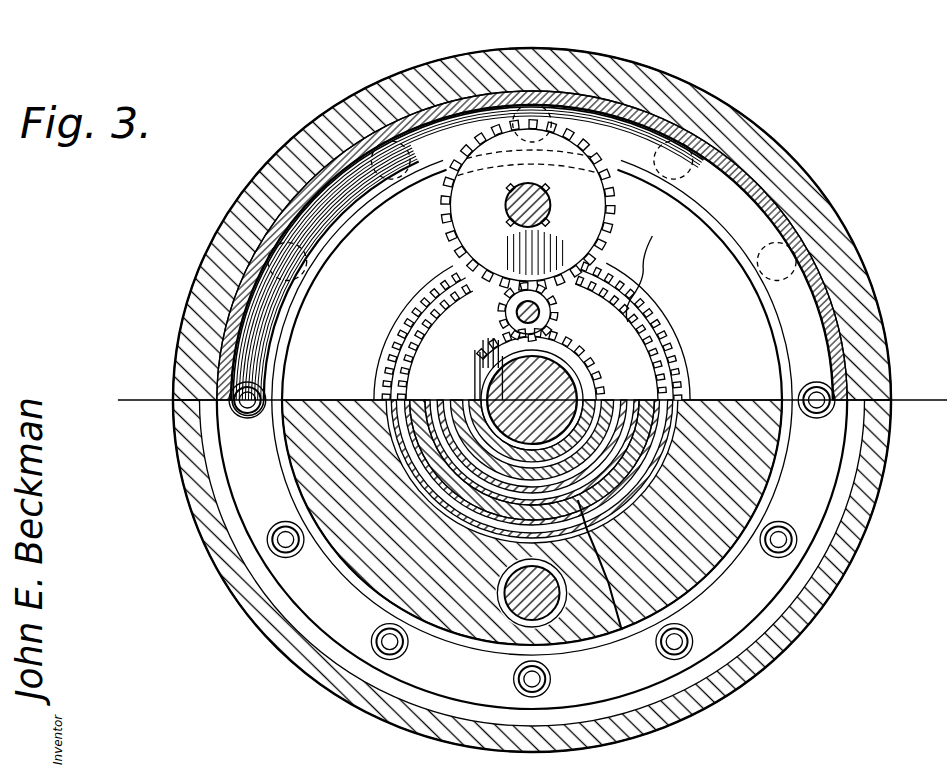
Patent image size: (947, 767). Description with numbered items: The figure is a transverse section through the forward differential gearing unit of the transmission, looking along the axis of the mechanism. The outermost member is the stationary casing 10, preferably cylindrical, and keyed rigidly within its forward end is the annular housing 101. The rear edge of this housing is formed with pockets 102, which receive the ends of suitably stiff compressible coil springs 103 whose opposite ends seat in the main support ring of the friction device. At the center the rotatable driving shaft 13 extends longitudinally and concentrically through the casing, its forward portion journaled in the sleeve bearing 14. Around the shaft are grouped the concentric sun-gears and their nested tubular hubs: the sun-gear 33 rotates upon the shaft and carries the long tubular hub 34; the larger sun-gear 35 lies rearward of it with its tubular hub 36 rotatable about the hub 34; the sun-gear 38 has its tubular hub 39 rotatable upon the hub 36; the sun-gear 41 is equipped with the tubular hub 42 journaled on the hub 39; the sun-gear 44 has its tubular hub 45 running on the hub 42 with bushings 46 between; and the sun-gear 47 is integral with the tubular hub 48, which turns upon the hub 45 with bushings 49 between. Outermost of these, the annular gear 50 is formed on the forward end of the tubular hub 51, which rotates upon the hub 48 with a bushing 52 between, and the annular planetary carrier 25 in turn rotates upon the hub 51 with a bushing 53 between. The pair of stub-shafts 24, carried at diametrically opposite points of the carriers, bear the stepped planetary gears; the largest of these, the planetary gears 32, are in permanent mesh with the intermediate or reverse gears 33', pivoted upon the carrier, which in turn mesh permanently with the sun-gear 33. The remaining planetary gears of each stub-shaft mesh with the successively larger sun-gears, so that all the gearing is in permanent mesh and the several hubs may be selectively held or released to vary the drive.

The stationary casing 10 is at (303, 150).
The annular housing 101 is at (288, 207).
The pockets 102 is at (527, 110).
The compressible coil springs 103 is at (277, 553).
The driving shaft 13 is at (548, 346).
The sleeve bearing 14 is at (578, 386).
The stub-shafts 24 is at (547, 200).
The annular planetary carrier 25 is at (725, 455).
The planetary gears 32 is at (443, 233).
The sun-gear 33 is at (655, 333).
The intermediate or reverse gears 33' is at (436, 343).
The tubular hub 34 is at (508, 338).
The sun-gear 35 is at (670, 377).
The tubular hub 36 is at (474, 353).
The sun-gear 38 is at (652, 317).
The tubular hub 39 is at (474, 398).
The sun-gear 41 is at (652, 287).
The tubular hub 42 is at (450, 421).
The sun-gear 44 is at (648, 257).
The tubular hub 45 is at (428, 453).
The bushings 46 is at (707, 583).
The sun-gear 47 is at (637, 296).
The tubular hub 48 is at (424, 473).
The bushings 49 is at (607, 548).
The annular gear 50 is at (462, 270).
The tubular hub 51 is at (424, 507).
The bushing 52 is at (482, 525).
The bushing 53 is at (672, 473).